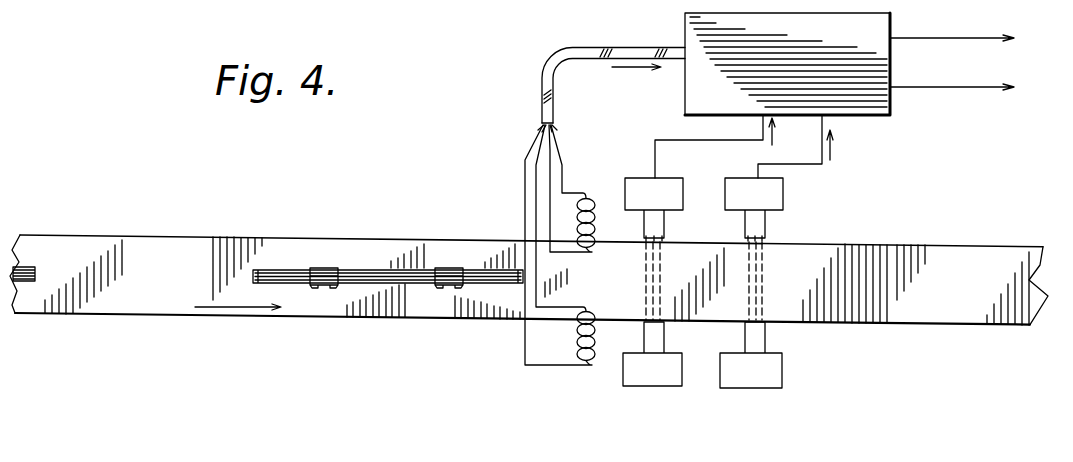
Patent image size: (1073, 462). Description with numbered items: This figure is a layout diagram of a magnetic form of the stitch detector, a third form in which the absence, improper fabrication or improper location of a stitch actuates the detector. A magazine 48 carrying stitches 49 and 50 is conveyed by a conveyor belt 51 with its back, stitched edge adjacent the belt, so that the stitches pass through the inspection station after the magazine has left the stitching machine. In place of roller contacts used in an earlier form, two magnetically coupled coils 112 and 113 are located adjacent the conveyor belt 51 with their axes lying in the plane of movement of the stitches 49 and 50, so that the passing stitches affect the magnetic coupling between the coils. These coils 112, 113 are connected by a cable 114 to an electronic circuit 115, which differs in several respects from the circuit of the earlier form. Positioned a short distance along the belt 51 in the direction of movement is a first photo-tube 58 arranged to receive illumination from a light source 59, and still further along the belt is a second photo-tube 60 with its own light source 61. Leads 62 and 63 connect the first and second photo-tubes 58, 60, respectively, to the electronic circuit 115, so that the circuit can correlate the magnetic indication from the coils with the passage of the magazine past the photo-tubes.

The magazine 48 is at (28, 266).
The stitch 49 is at (445, 268).
The stitch 50 is at (327, 268).
The conveyor belt 51 is at (248, 236).
The first photo-tube 58 is at (666, 227).
The light source 59 is at (665, 348).
The second photo-tube 60 is at (770, 232).
The light source 61 is at (767, 345).
The lead 62 is at (666, 140).
The lead 63 is at (826, 166).
The magnetically coupled coil 112 is at (603, 300).
The magnetically coupled coil 113 is at (593, 248).
The cable 114 is at (540, 74).
The electronic circuit 115 is at (677, 33).